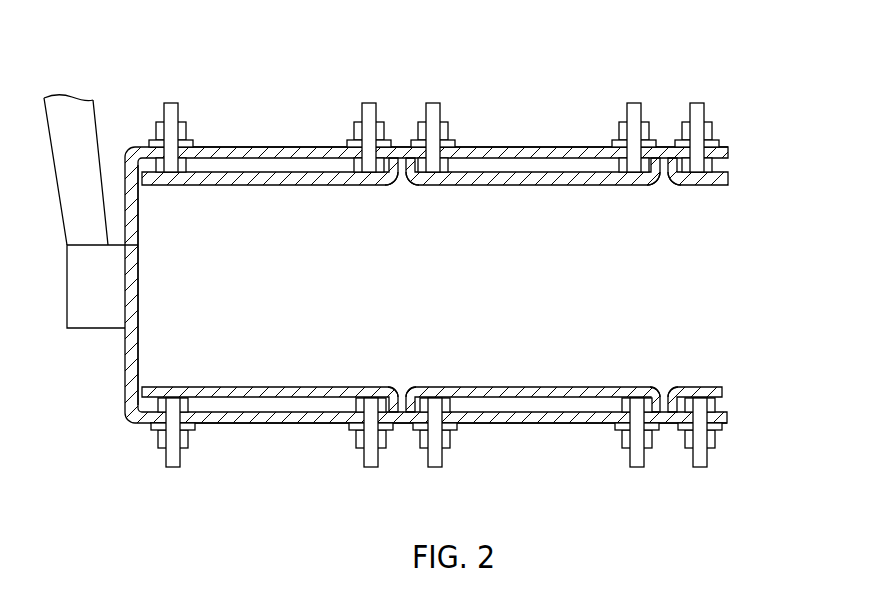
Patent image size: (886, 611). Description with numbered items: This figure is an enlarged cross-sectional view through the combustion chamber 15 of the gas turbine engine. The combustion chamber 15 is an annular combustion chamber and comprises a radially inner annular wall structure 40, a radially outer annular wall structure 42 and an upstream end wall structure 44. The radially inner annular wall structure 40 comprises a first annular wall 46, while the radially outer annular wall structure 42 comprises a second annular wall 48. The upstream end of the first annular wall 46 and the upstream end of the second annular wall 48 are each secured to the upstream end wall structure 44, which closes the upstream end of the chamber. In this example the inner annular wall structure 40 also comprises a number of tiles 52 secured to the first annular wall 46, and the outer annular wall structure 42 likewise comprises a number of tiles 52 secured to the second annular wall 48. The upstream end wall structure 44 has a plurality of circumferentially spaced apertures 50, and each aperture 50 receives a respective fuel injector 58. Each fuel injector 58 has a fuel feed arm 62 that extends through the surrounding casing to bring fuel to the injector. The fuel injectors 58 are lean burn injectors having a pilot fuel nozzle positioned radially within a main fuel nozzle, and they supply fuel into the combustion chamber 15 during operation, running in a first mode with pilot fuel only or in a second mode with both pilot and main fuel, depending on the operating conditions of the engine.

The combustion chamber 15 is at (597, 71).
The radially inner annular wall structure 40 is at (743, 423).
The radially outer annular wall structure 42 is at (743, 143).
The upstream end wall structure 44 is at (125, 362).
The first annular wall 46 is at (593, 423).
The second annular wall 48 is at (553, 147).
The aperture 50 is at (130, 246).
The tiles 52 is at (473, 187).
The fuel injector 58 is at (80, 300).
The fuel feed arm 62 is at (78, 195).